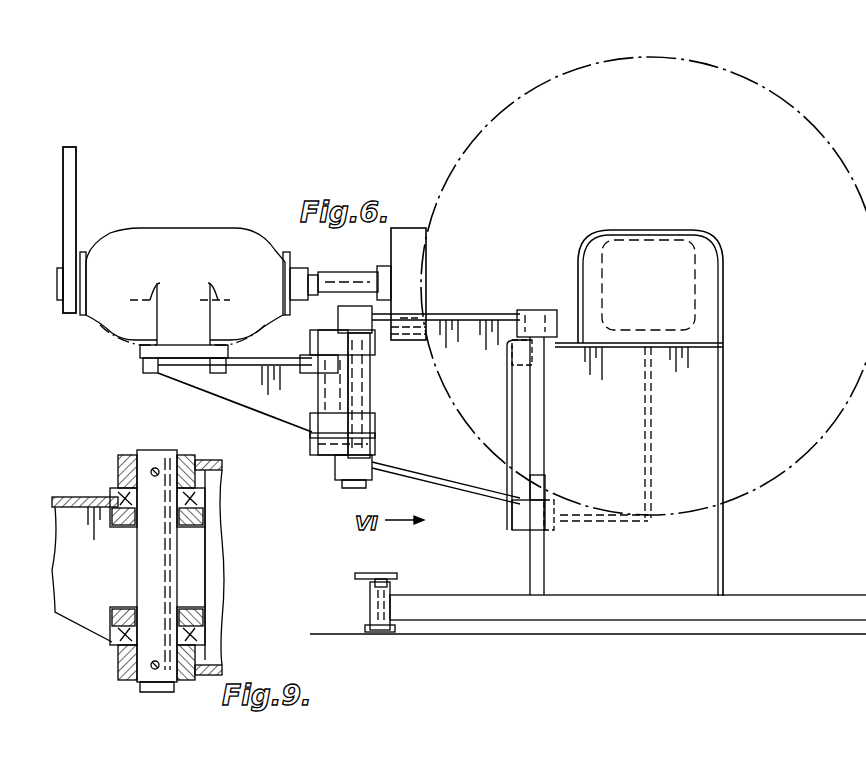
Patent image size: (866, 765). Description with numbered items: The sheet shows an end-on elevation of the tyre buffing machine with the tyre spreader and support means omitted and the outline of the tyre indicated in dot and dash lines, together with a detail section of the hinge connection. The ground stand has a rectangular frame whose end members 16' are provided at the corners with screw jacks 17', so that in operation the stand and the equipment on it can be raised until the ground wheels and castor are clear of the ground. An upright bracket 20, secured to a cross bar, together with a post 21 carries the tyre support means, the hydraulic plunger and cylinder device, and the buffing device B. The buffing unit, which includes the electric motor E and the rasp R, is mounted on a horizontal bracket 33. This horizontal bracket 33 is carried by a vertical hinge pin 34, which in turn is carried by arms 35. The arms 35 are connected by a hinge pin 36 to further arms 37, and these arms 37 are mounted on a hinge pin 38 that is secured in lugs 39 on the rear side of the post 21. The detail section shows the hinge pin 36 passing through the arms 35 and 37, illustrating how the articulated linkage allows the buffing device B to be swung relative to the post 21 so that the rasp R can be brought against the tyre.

In FIG. 6, the electric motor E is at (208, 240).
In FIG. 6, the buffing device B is at (271, 228).
In FIG. 6, the rasp R is at (395, 252).
In FIG. 6, the end members 16' is at (588, 602).
In FIG. 6, the screw jacks 17' is at (382, 585).
In FIG. 6, the upright bracket 20 is at (712, 530).
In FIG. 6, the post 21 is at (535, 548).
In FIG. 6, the horizontal bracket 33 is at (288, 363).
In FIG. 6, the vertical hinge pin 34 is at (331, 465).
In FIG. 6, the arms 35 is at (378, 456).
In FIG. 9, the arms 35 is at (95, 498).
In FIG. 6, the hinge pin 36 is at (350, 308).
In FIG. 9, the hinge pin 36 is at (170, 440).
In FIG. 6, the arms 37 is at (476, 316).
In FIG. 9, the arms 37 is at (220, 455).
In FIG. 6, the hinge pin 38 is at (552, 302).
In FIG. 6, the lugs 39 is at (512, 480).